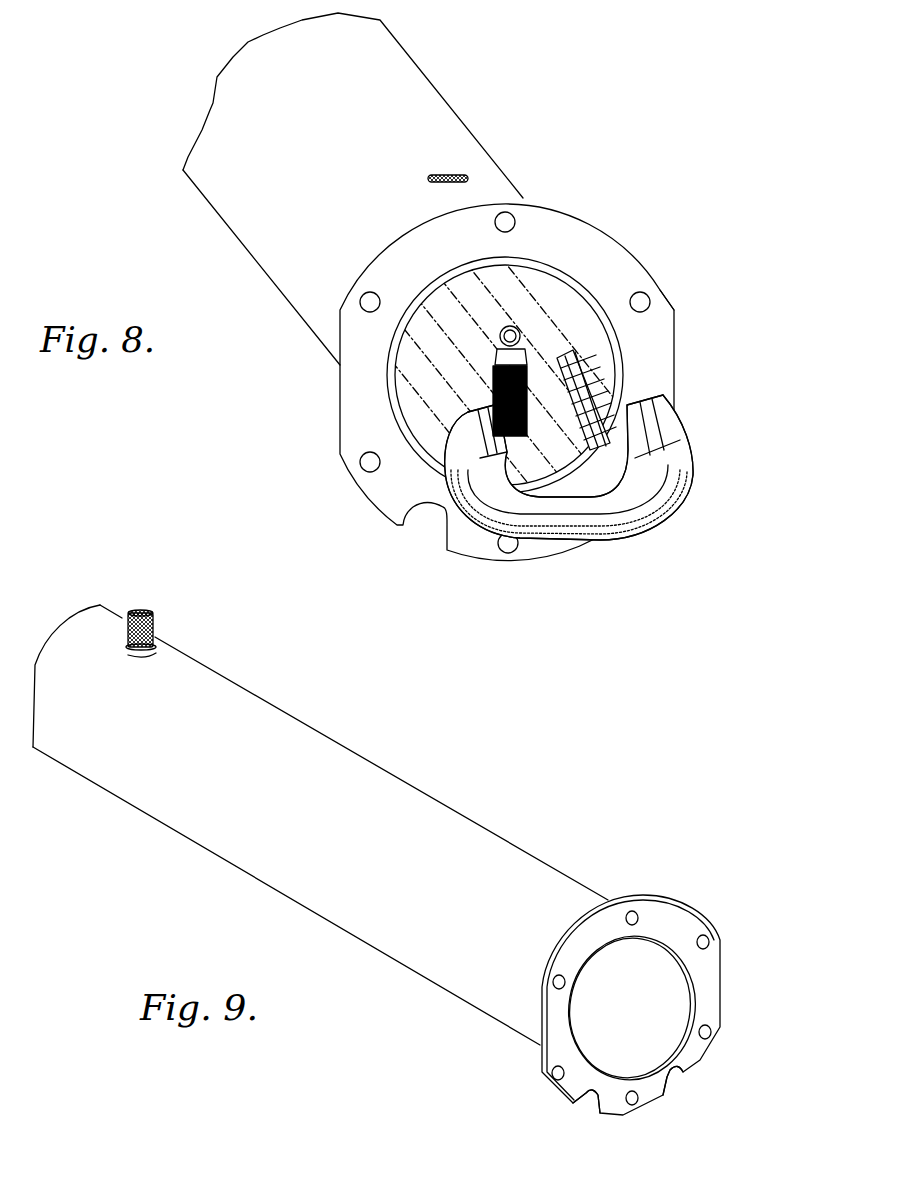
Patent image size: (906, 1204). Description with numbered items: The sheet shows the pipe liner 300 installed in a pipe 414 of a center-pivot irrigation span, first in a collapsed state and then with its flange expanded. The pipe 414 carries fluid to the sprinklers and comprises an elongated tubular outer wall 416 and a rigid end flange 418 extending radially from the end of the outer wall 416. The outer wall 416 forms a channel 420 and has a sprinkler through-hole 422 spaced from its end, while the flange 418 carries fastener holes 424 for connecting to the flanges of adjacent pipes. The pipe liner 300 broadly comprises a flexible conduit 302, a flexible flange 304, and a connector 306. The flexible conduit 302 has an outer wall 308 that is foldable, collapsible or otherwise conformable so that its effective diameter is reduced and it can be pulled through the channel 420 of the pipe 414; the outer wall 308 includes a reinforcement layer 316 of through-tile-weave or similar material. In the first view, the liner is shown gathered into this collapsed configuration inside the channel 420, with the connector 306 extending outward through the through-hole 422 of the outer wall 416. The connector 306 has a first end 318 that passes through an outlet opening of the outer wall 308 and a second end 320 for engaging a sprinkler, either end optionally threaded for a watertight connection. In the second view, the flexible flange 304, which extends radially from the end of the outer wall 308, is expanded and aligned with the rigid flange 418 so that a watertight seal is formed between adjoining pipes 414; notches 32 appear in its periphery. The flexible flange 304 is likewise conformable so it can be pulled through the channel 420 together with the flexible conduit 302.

In FIG. 8, the pipe liner 300 is at (635, 388).
In FIG. 8, the flexible conduit 302 is at (467, 305).
In FIG. 9, the flexible conduit 302 is at (655, 912).
In FIG. 8, the flexible flange 304 is at (577, 536).
In FIG. 9, the flexible flange 304 is at (690, 927).
In FIG. 8, the connector 306 is at (405, 372).
In FIG. 9, the outer wall 308 is at (645, 1028).
In FIG. 8, the reinforcement layer 316 is at (528, 385).
In FIG. 9, the reinforcement layer 316 is at (154, 617).
In FIG. 9, the first end 318 is at (118, 645).
In FIG. 9, the second end 320 is at (118, 626).
In FIG. 9, the notches 32 is at (630, 1113).
In FIG. 8, the pipe 414 is at (222, 167).
In FIG. 9, the pipe 414 is at (215, 808).
In FIG. 8, the outer wall 416 is at (255, 222).
In FIG. 9, the outer wall 416 is at (325, 887).
In FIG. 8, the rigid end flange 418 is at (375, 484).
In FIG. 9, the rigid end flange 418 is at (540, 1048).
In FIG. 8, the channel 420 is at (578, 300).
In FIG. 8, the sprinkler through-hole 422 is at (458, 174).
In FIG. 9, the sprinkler through-hole 422 is at (154, 650).
In FIG. 8, the fastener hole 424 is at (520, 214).